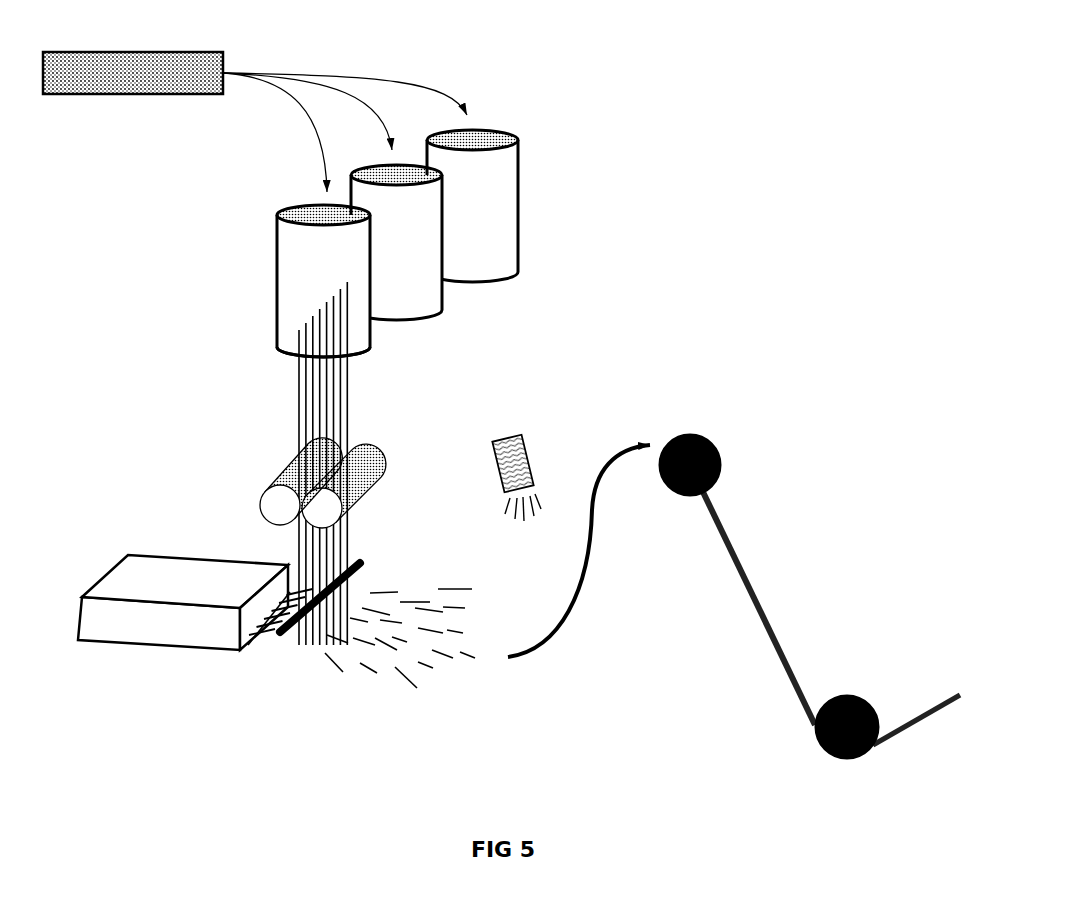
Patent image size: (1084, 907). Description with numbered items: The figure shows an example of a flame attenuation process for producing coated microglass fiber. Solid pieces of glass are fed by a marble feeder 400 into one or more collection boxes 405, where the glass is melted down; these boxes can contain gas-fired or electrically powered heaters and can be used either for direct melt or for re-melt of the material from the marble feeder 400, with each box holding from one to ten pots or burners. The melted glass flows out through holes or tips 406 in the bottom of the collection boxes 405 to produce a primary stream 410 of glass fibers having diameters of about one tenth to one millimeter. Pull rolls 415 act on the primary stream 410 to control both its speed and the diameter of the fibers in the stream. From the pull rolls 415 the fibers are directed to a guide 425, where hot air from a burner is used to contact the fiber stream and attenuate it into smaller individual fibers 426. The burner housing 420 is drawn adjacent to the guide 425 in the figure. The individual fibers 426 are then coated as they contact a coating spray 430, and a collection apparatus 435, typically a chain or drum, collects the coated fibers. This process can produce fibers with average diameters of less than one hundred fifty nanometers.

The marble feeder 400 is at (232, 60).
The collection boxes 405 is at (527, 210).
The holes or tips 406 is at (353, 352).
The primary stream 410 is at (295, 417).
The pull rolls 415 is at (260, 485).
The cutter housing 420 is at (140, 652).
The guide 425 is at (283, 647).
The individual fibers 426 is at (458, 677).
The coating spray 430 is at (535, 455).
The collection apparatus 435 is at (733, 508).